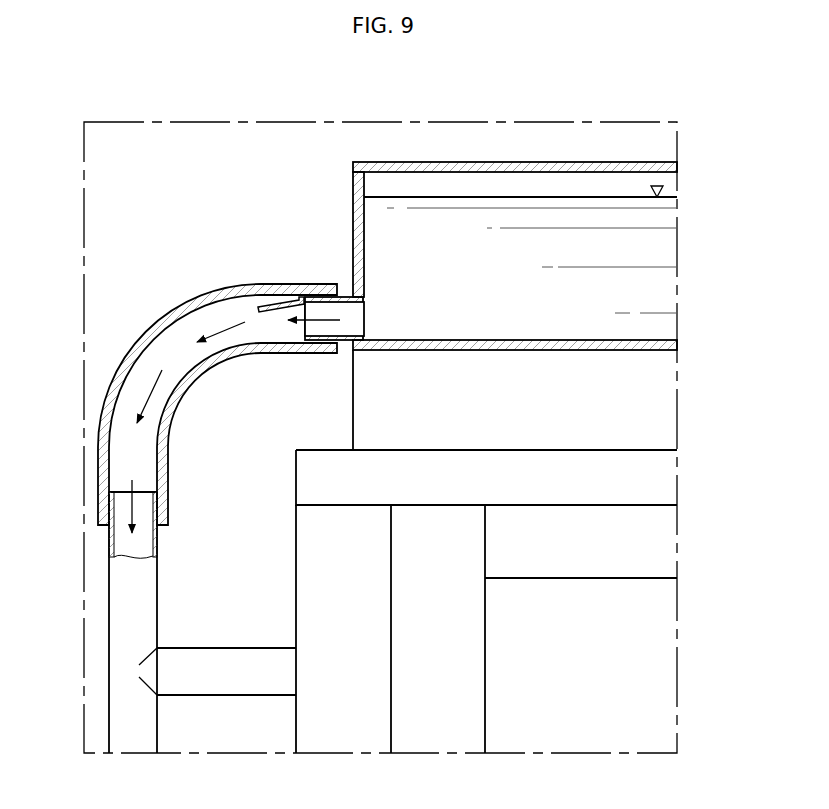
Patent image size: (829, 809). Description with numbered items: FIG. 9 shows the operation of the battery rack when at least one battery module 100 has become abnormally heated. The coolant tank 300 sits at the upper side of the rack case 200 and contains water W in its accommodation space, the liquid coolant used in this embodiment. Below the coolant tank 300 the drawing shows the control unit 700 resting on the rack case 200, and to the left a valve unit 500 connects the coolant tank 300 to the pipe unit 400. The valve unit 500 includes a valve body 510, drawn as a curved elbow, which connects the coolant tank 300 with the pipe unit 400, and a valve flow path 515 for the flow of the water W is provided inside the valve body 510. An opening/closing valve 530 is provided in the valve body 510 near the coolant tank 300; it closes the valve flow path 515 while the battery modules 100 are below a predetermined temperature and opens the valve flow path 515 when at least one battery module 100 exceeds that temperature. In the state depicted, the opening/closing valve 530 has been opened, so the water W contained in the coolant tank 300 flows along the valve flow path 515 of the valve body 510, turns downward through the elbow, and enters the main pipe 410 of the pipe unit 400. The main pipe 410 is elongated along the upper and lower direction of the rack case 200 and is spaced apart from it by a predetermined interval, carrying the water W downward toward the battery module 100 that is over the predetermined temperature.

The battery module 100 is at (657, 659).
The rack case 200 is at (657, 479).
The coolant tank 300 is at (612, 162).
The pipe unit 400 is at (94, 616).
The main pipe 410 is at (116, 583).
The valve unit 500 is at (217, 365).
The valve body 510 is at (161, 322).
The valve flow path 515 is at (148, 377).
The opening/closing valve 530 is at (279, 302).
The control unit 700 is at (657, 398).
The water W is at (325, 318).